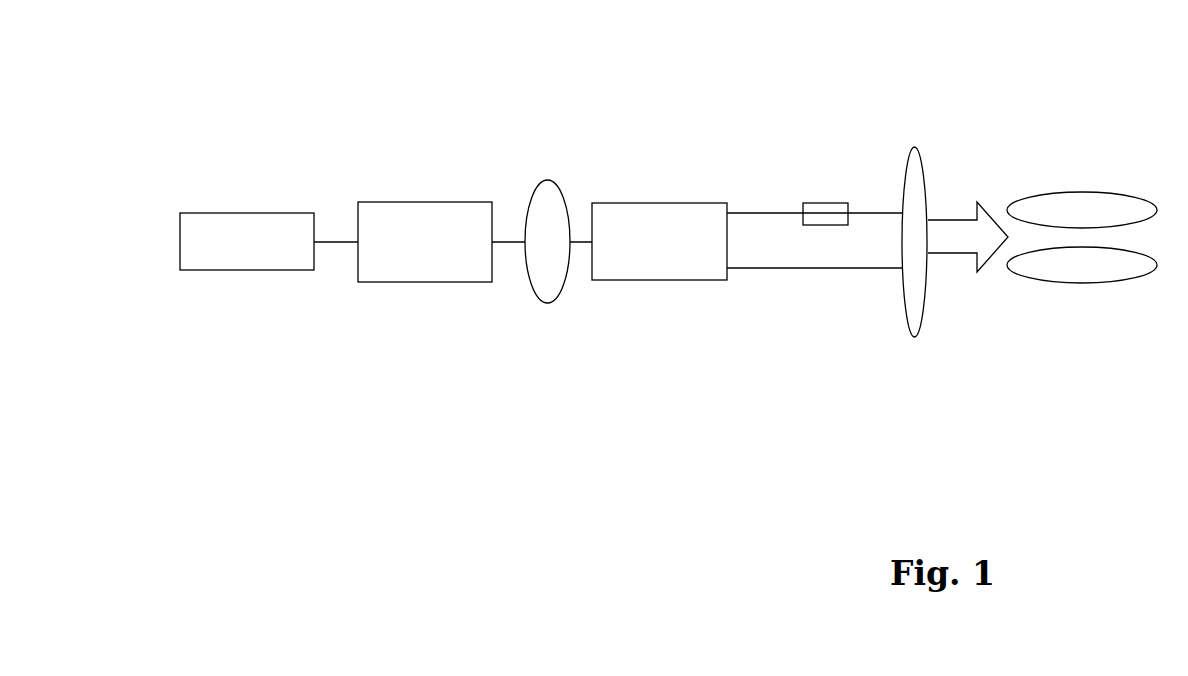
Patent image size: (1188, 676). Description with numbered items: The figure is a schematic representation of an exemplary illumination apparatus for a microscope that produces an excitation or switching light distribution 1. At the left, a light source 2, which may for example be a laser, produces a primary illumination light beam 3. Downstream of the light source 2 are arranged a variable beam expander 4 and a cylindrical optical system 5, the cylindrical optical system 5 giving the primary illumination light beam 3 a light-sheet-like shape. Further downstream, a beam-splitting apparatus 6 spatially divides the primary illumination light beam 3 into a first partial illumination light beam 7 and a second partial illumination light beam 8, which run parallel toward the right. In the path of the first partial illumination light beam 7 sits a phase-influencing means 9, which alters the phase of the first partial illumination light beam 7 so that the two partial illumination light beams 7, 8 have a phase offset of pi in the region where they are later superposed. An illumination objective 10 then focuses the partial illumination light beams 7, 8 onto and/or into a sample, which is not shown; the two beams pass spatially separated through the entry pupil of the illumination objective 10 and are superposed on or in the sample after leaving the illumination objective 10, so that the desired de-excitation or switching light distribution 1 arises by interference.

The excitation or switching light distribution 1 is at (1090, 162).
The light source 2 is at (229, 227).
The primary illumination light beam 3 is at (333, 240).
The variable beam expander 4 is at (432, 235).
The cylindrical optical system 5 is at (549, 200).
The beam-splitting apparatus 6 is at (672, 223).
The first partial illumination light beam 7 is at (757, 212).
The second partial illumination light beam 8 is at (772, 268).
The phase-influencing means 9 is at (817, 210).
The illumination objective 10 is at (915, 173).